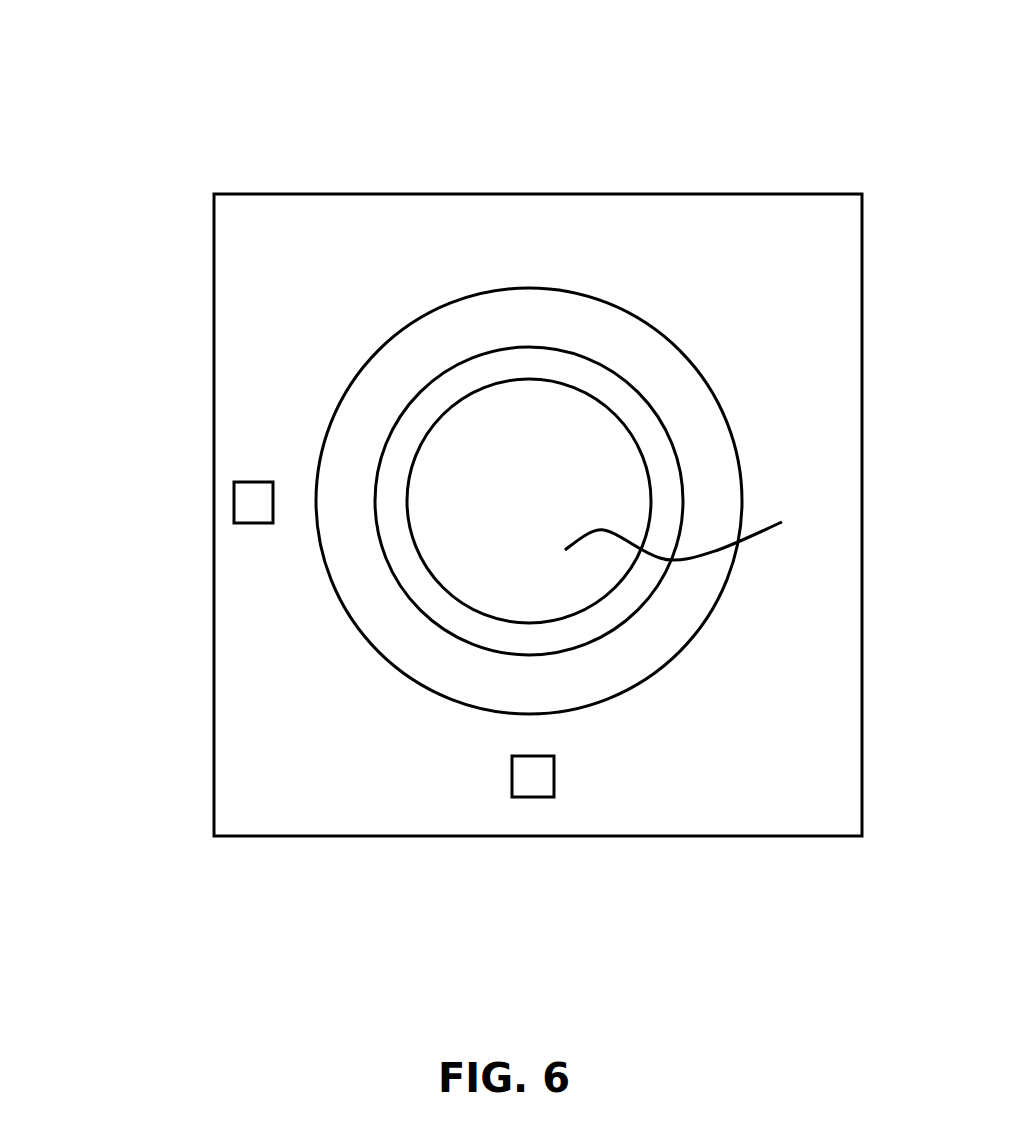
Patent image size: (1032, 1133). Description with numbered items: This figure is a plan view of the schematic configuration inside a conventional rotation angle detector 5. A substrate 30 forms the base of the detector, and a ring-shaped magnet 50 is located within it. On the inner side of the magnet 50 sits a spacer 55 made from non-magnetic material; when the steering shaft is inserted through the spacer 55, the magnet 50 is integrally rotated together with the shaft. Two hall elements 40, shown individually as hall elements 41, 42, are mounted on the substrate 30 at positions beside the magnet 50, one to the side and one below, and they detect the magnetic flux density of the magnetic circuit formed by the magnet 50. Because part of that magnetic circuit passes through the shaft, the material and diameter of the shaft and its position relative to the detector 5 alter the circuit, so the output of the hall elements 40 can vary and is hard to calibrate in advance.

The rotation angle detector 5 is at (620, 133).
The substrate 30 is at (230, 330).
The hall elements 40 is at (297, 697).
The first magnetic sensor 41 is at (236, 503).
The second magnetic sensor 42 is at (533, 785).
The magnet 50 is at (658, 370).
The spacer 55 is at (560, 368).